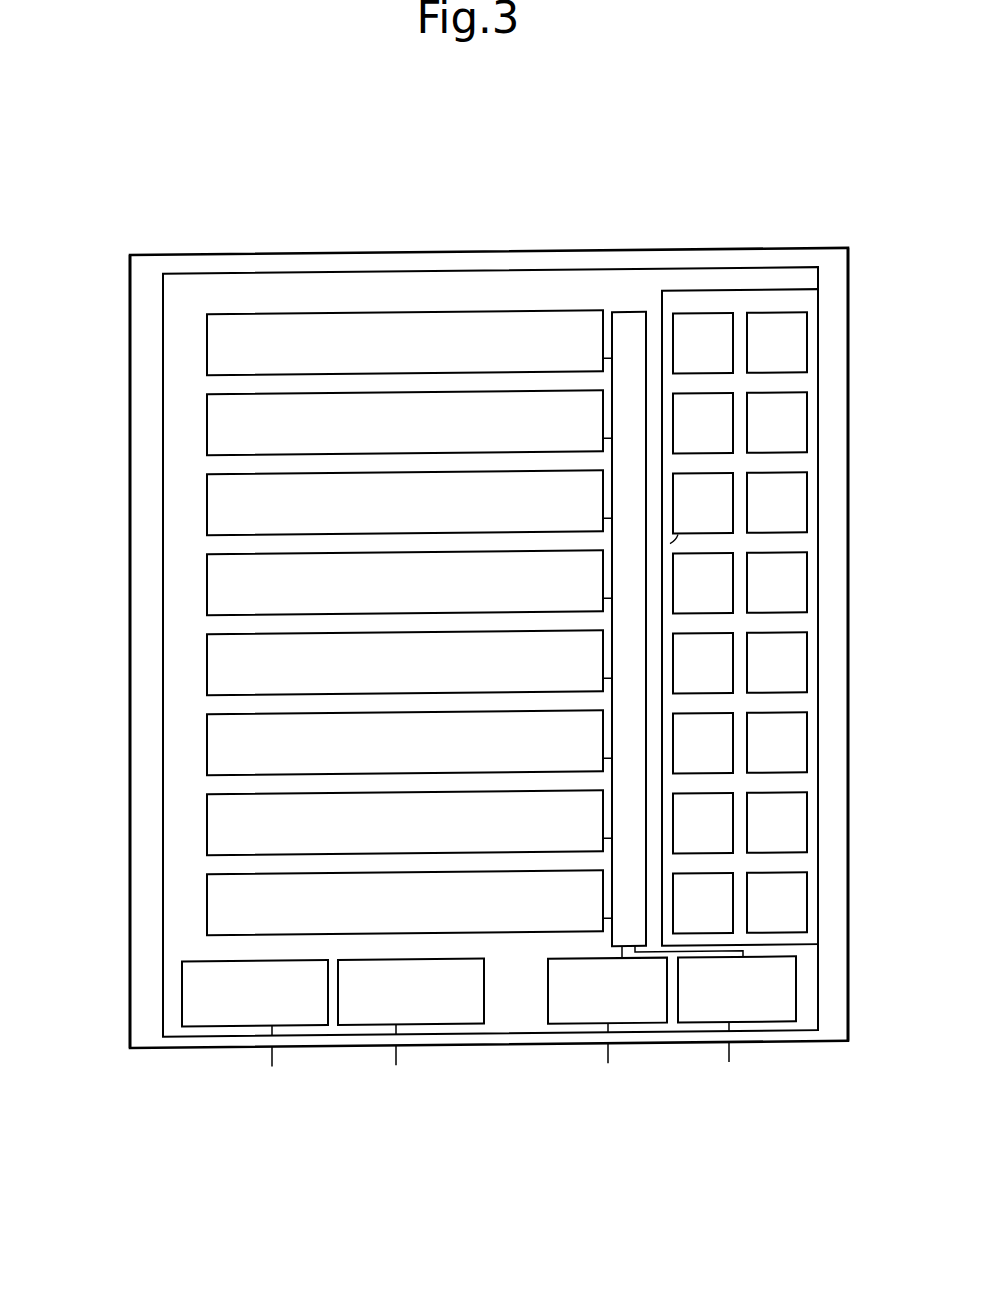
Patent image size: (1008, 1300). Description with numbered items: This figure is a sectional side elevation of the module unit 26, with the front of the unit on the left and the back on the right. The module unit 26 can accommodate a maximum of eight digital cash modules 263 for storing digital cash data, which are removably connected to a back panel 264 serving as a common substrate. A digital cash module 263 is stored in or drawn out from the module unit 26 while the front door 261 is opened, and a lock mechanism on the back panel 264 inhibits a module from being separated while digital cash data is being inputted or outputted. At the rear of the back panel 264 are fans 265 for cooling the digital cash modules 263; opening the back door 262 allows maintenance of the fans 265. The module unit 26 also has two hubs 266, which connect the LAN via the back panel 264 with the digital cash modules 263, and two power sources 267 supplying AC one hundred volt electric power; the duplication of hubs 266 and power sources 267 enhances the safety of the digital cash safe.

The module unit 26 is at (470, 240).
The front door 261 is at (139, 287).
The back door 262 is at (829, 285).
The digital cash module 263 is at (207, 348).
The back panel 264 is at (623, 340).
The fan 265 is at (682, 323).
The hub 266 is at (583, 1030).
The power source 267 is at (182, 1003).